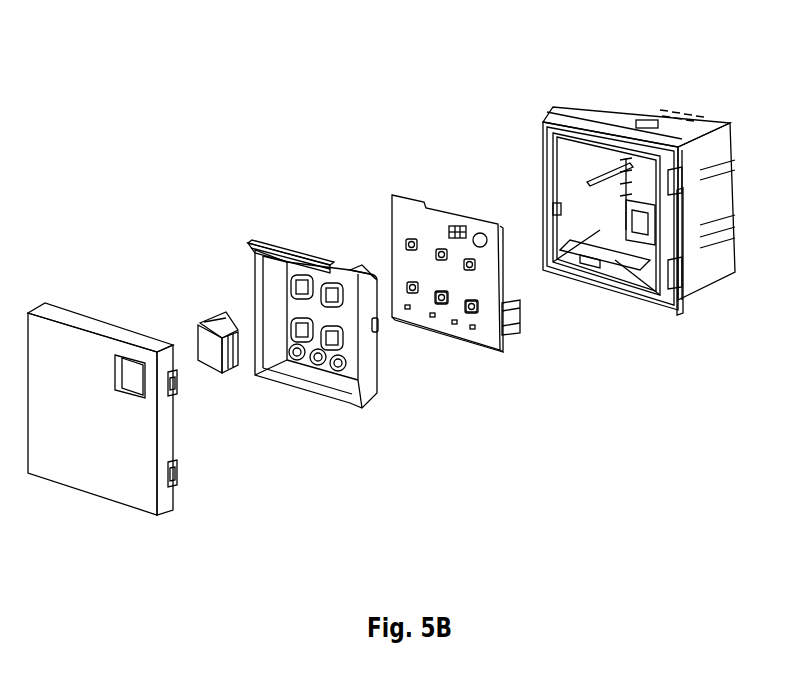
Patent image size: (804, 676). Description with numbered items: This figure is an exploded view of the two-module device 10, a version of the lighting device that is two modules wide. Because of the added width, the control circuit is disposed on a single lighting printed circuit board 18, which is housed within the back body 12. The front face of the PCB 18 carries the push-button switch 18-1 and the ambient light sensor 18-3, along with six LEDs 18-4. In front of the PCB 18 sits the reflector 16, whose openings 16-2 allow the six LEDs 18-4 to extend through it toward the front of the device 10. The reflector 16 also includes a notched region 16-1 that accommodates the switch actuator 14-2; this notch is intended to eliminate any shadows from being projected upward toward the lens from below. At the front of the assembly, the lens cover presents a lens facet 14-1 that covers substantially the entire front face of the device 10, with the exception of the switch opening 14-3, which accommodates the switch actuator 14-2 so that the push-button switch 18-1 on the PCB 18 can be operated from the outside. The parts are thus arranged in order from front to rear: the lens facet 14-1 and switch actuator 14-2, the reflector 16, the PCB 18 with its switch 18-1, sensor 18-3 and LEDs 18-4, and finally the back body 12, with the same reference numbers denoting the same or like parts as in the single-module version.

The device 10 is at (140, 182).
The back body 12 is at (627, 103).
The lens facet 14-1 is at (78, 453).
The switch actuator 14-2 is at (212, 357).
The switch opening 14-3 is at (122, 370).
The reflector 16 is at (280, 262).
The notched region 16-1 is at (340, 270).
The openings 16-2 is at (302, 342).
The lighting printed circuit board 18 is at (368, 168).
The push-button switch 18-1 is at (452, 223).
The ambient light sensor 18-3 is at (480, 237).
The LEDs 18-4 is at (438, 302).